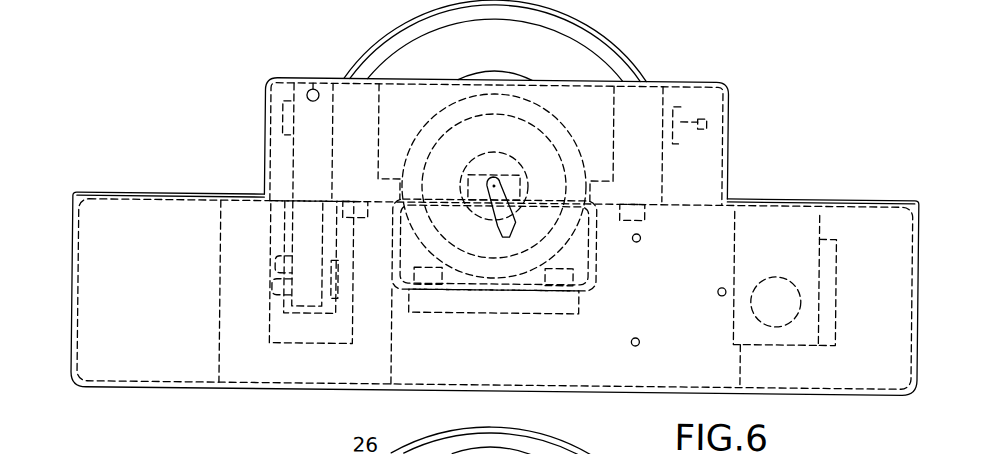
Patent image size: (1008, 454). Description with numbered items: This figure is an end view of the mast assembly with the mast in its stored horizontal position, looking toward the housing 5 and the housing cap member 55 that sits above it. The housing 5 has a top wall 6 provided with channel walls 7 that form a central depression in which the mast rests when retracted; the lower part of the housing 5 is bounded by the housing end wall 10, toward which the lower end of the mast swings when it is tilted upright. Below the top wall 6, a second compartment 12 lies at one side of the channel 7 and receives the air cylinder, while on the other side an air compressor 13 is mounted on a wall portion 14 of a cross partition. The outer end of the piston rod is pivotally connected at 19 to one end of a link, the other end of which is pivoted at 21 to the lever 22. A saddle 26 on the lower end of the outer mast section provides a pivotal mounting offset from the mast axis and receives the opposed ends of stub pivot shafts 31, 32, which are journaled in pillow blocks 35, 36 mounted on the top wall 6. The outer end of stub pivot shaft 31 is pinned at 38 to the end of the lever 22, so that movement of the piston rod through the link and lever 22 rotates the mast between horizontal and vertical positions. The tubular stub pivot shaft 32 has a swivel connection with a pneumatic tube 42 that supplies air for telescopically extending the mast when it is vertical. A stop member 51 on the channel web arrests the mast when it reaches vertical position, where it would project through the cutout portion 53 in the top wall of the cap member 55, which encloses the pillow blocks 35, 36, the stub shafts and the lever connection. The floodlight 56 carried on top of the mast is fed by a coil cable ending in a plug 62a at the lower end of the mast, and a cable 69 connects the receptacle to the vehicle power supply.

The housing 5 is at (141, 368).
The top wall 6 is at (867, 197).
The channel walls 7 is at (534, 295).
The housing end wall 10 is at (421, 352).
The second compartment 12 is at (453, 41).
The air compressor 13 is at (840, 275).
The wall portion 14 is at (746, 369).
The pivotal connection 19 is at (277, 292).
The pivot 21 is at (279, 267).
The lever 22 is at (293, 235).
The saddle 26 is at (428, 80).
The stub pivot shaft 31 is at (276, 103).
The stub pivot shaft 32 is at (679, 101).
The pillow block 35 is at (331, 143).
The pillow block 36 is at (662, 177).
The pin 38 is at (310, 78).
The pneumatic tube 42 is at (702, 115).
The stop member 51 is at (566, 316).
The cutout portion 53 is at (513, 440).
The housing cap member 55 is at (678, 77).
The floodlight 56 is at (615, 33).
The plug 62a is at (488, 174).
The cable 69 is at (489, 222).